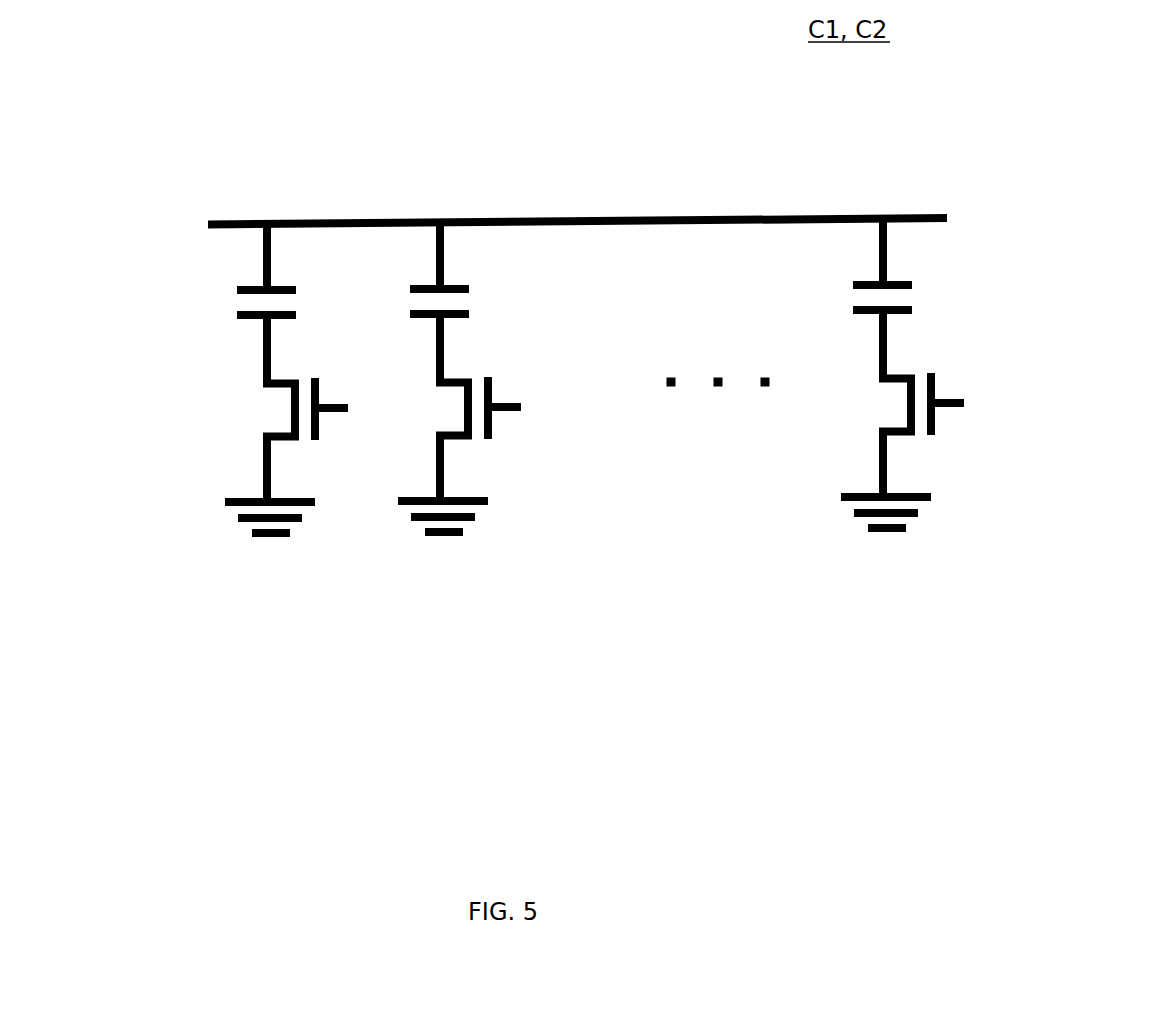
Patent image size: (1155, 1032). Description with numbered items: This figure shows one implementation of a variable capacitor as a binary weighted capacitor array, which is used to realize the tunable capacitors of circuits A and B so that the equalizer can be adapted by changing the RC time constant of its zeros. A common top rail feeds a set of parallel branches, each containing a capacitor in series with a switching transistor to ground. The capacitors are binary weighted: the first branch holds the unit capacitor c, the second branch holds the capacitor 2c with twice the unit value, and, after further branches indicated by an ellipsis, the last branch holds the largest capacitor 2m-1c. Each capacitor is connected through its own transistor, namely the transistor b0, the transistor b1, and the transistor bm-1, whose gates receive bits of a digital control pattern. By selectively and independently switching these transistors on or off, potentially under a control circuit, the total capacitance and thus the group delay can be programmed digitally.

The unit capacitor c is at (287, 302).
The double-weight capacitor 2c is at (478, 301).
The largest binary-weighted capacitor 2m-1c is at (942, 297).
The switching transistor b0 is at (311, 437).
The switching transistor b1 is at (491, 437).
The switching transistor bm-1 is at (956, 435).